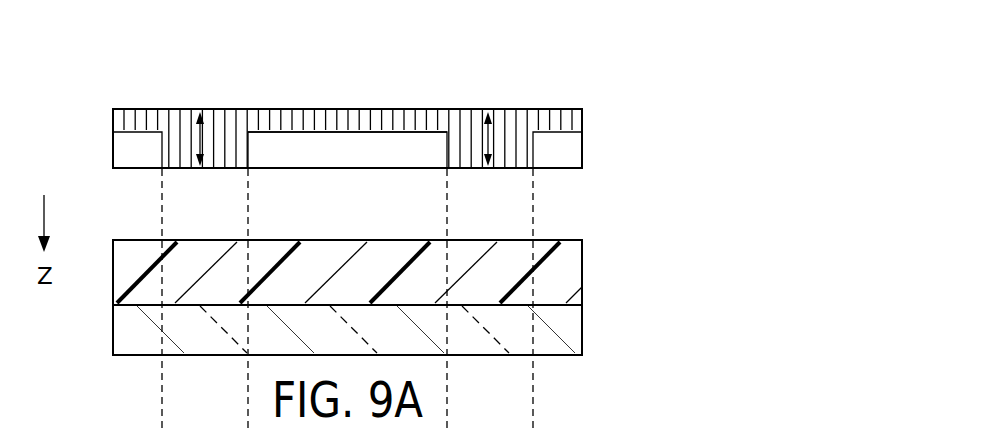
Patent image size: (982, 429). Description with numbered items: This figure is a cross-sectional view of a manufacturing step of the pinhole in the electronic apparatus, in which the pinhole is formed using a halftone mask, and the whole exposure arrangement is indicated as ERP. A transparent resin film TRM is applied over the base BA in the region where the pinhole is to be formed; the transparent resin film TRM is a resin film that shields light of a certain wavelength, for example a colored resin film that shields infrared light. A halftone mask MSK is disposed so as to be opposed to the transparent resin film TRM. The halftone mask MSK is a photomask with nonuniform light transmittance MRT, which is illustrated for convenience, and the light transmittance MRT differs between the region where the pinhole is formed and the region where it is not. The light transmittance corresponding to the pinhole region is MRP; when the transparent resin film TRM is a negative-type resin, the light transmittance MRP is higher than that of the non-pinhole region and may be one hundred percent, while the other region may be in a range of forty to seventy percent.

The etching resist pattern forming process ERP is at (598, 66).
The halftone mask MSK is at (582, 150).
The light transmittance of pinhole region MRP is at (205, 141).
The light transmittance MRT is at (338, 110).
The transparent resin film TRM is at (567, 275).
The base BA is at (567, 333).